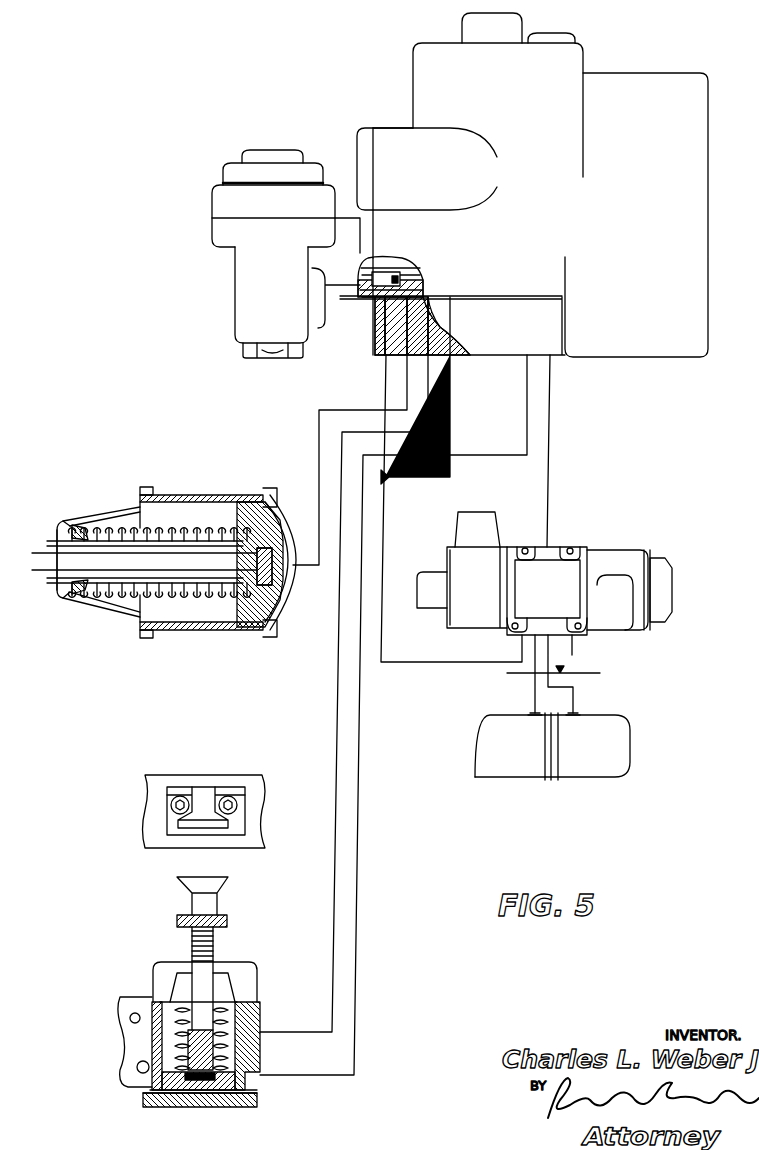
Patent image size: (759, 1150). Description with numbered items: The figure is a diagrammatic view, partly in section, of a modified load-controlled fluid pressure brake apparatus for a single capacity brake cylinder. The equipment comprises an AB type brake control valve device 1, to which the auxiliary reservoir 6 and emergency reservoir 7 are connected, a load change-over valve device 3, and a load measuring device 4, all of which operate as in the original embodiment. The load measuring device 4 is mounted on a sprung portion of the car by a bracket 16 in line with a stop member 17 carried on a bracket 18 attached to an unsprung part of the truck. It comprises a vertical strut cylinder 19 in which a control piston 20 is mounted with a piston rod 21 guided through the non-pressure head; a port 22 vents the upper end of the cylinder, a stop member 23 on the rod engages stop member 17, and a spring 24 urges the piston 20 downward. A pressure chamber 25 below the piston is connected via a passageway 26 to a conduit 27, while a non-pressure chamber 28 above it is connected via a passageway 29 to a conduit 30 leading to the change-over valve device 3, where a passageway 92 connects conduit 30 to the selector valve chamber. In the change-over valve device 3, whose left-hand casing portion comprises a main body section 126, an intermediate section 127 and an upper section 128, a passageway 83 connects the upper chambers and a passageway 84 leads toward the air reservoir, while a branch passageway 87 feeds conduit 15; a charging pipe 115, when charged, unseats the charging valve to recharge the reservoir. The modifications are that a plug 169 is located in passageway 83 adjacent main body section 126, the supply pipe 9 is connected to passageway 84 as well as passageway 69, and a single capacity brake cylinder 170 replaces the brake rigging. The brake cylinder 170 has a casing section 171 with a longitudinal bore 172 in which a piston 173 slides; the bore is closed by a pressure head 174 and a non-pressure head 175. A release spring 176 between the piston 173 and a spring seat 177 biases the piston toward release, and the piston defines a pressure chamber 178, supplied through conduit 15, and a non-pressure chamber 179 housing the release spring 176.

The brake control valve device 1 is at (644, 549).
The load change-over valve device 3 is at (578, 200).
The load measuring device 4 is at (198, 993).
The auxiliary reservoir 6 is at (622, 750).
The emergency reservoir 7 is at (480, 737).
The supply pipe 9 is at (386, 510).
The conduit 15 is at (365, 391).
The bracket 16 is at (130, 1027).
The stop member 17 is at (227, 820).
The bracket 18 is at (152, 804).
The strut cylinder 19 is at (157, 1040).
The control piston 20 is at (247, 1094).
The piston rod 21 is at (205, 967).
The port 22 is at (177, 985).
The stop member 23 is at (223, 922).
The spring 24 is at (220, 1020).
The pressure chamber 25 is at (152, 1092).
The passageway 26 is at (253, 1062).
The conduit 27 is at (526, 385).
The non-pressure chamber 28 is at (160, 1002).
The passageway 29 is at (245, 1030).
The conduit 30 is at (428, 403).
The passageway 69 is at (373, 291).
The passageway 83 is at (418, 273).
The passageway 84 is at (382, 356).
The branch passageway 87 is at (423, 295).
The passageway 92 is at (428, 325).
The charging pipe 115 is at (549, 457).
The main body section 126 is at (243, 296).
The intermediate section 127 is at (218, 203).
The upper section 128 is at (228, 176).
The plug 169 is at (378, 291).
The single capacity brake cylinder 170 is at (169, 551).
The casing section 171 is at (210, 624).
The longitudinal bore 172 is at (163, 618).
The piston 173 is at (243, 505).
The pressure head 174 is at (282, 507).
The non-pressure head 175 is at (97, 518).
The release spring 176 is at (123, 595).
The spring seat 177 is at (80, 590).
The pressure chamber 178 is at (268, 633).
The non-pressure chamber 179 is at (182, 508).